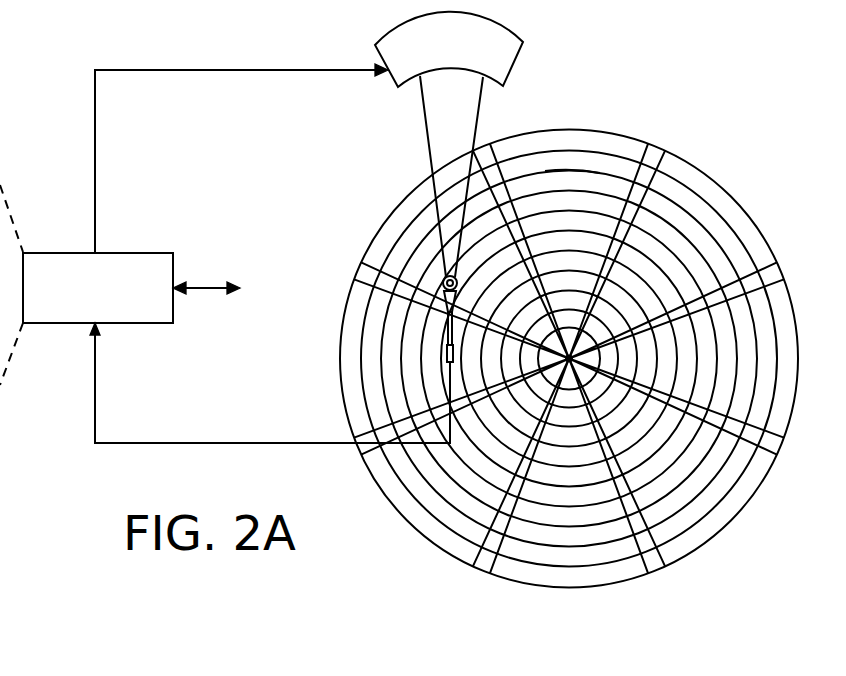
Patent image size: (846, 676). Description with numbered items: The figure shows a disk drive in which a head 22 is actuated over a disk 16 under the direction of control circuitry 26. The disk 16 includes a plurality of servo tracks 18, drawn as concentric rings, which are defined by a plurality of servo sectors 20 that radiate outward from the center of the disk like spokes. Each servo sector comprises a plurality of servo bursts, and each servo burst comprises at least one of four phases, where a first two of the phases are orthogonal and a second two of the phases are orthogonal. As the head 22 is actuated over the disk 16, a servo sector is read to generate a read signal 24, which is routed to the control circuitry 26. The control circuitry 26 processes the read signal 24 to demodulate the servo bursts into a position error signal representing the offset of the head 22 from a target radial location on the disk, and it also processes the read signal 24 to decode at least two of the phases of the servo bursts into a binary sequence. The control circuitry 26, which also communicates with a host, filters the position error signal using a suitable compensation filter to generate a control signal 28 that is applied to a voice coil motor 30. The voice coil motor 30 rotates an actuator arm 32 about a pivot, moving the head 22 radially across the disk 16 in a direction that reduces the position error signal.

The disk 16 is at (724, 178).
The servo tracks 18 is at (565, 160).
The servo sectors 20 is at (573, 363).
The head 22 is at (438, 358).
The read signal 24 is at (233, 441).
The control circuitry 26 is at (136, 252).
The control signal 28 is at (94, 150).
The voice coil motor (VCM) 30 is at (392, 80).
The actuator arm 32 is at (432, 158).